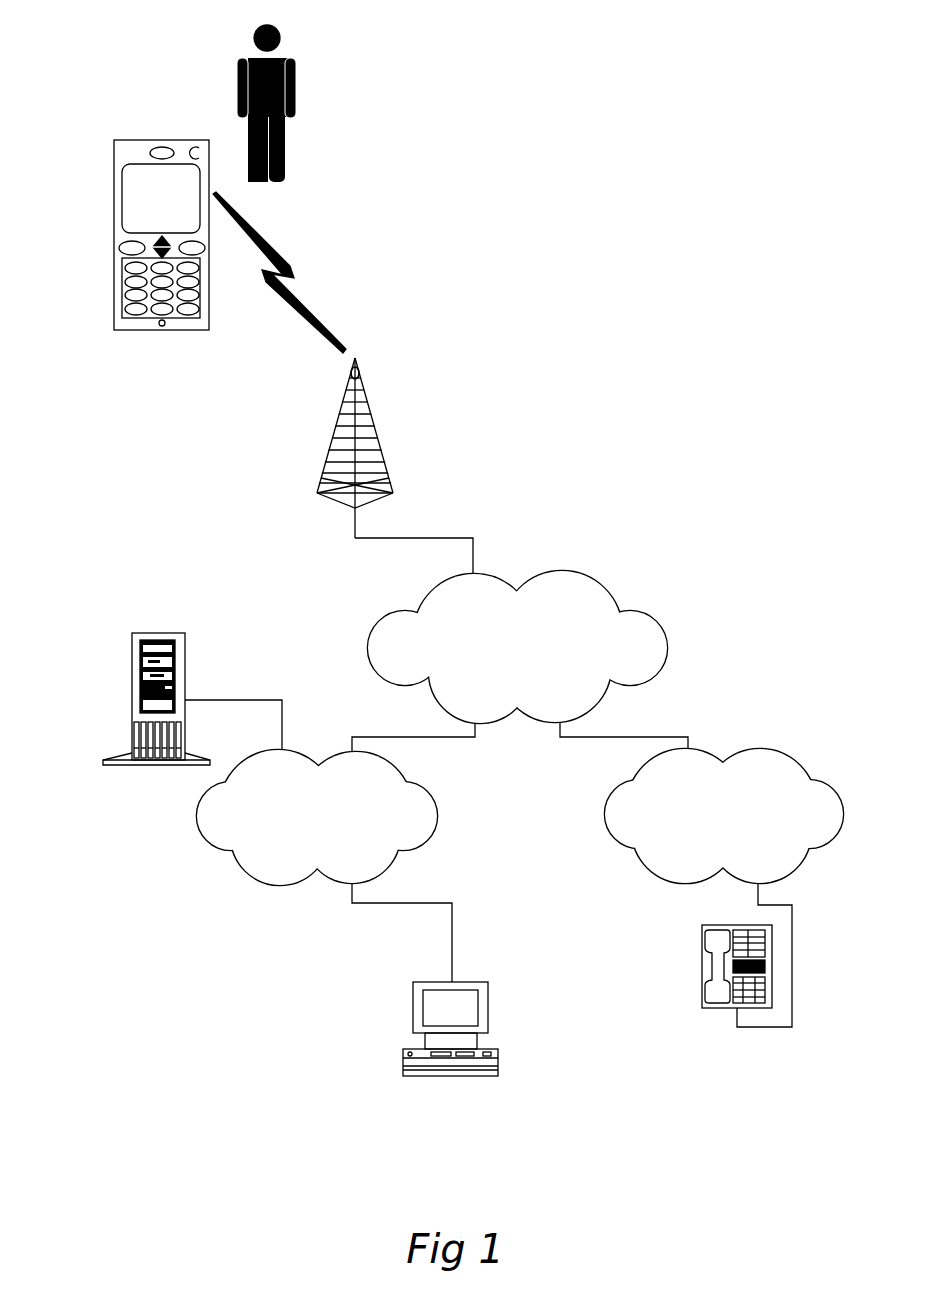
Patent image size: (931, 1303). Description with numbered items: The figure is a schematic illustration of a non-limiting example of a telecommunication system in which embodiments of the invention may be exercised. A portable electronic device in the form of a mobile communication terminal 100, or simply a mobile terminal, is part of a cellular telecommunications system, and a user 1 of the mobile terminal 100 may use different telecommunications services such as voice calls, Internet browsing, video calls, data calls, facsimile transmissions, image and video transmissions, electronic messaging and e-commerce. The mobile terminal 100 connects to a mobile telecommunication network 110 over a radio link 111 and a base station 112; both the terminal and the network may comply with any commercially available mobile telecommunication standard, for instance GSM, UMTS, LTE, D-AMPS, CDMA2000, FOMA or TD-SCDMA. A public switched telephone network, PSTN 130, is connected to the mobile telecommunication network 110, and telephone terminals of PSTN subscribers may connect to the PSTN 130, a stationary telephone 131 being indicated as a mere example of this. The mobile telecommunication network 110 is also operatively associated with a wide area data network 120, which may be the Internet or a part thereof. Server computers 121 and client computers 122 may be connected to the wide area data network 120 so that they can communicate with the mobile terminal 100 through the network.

The user 1 is at (288, 60).
The mobile communication terminal 100 is at (118, 155).
The radio link 111 is at (283, 258).
The base station 112 is at (355, 438).
The mobile telecommunication network 110 is at (517, 647).
The wide area data network 120 is at (317, 817).
The server computer 121 is at (185, 640).
The client computer 122 is at (468, 990).
The public switched telephone network (PSTN) 130 is at (724, 816).
The stationary telephone 131 is at (718, 965).